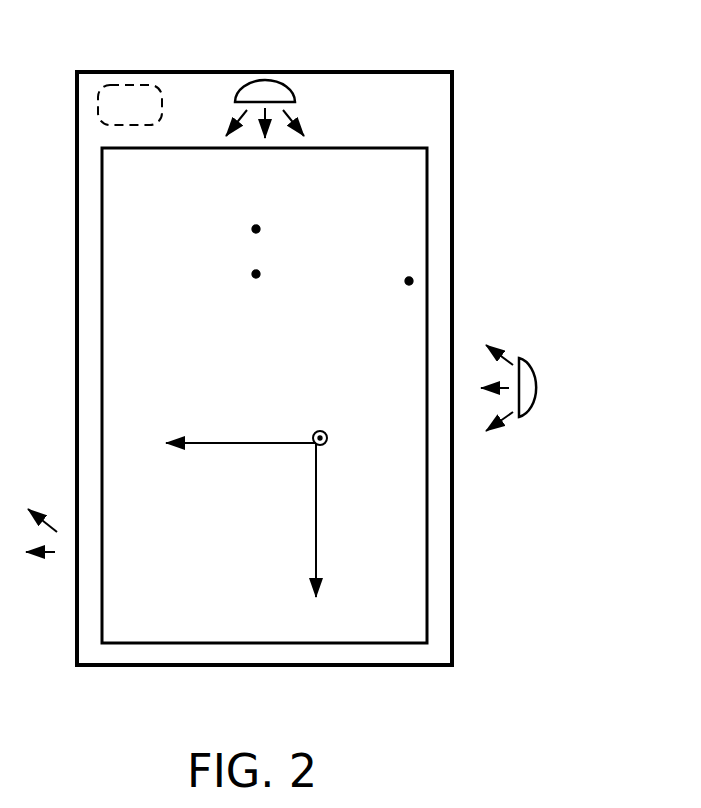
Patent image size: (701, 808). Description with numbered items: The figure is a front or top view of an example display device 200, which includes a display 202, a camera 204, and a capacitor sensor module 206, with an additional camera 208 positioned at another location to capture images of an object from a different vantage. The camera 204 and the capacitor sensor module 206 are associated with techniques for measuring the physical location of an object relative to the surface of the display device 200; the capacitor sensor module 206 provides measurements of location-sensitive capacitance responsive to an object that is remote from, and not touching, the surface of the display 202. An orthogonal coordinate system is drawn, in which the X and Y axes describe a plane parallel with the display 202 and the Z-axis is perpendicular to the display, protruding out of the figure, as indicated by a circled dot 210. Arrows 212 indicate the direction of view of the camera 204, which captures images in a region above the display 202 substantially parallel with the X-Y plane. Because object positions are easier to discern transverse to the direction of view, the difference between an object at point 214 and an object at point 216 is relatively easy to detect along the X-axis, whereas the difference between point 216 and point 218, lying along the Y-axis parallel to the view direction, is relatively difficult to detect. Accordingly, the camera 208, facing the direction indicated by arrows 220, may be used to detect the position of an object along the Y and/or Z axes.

The display device 200 is at (552, 42).
The display 202 is at (180, 206).
The camera 204 is at (272, 82).
The capacitor sensor module 206 is at (118, 88).
The camera 208 is at (541, 396).
The circled dot 210 is at (318, 430).
The arrows 212 is at (292, 116).
The point 214 is at (409, 280).
The point 216 is at (256, 228).
The point 218 is at (256, 275).
The arrows 220 is at (506, 414).